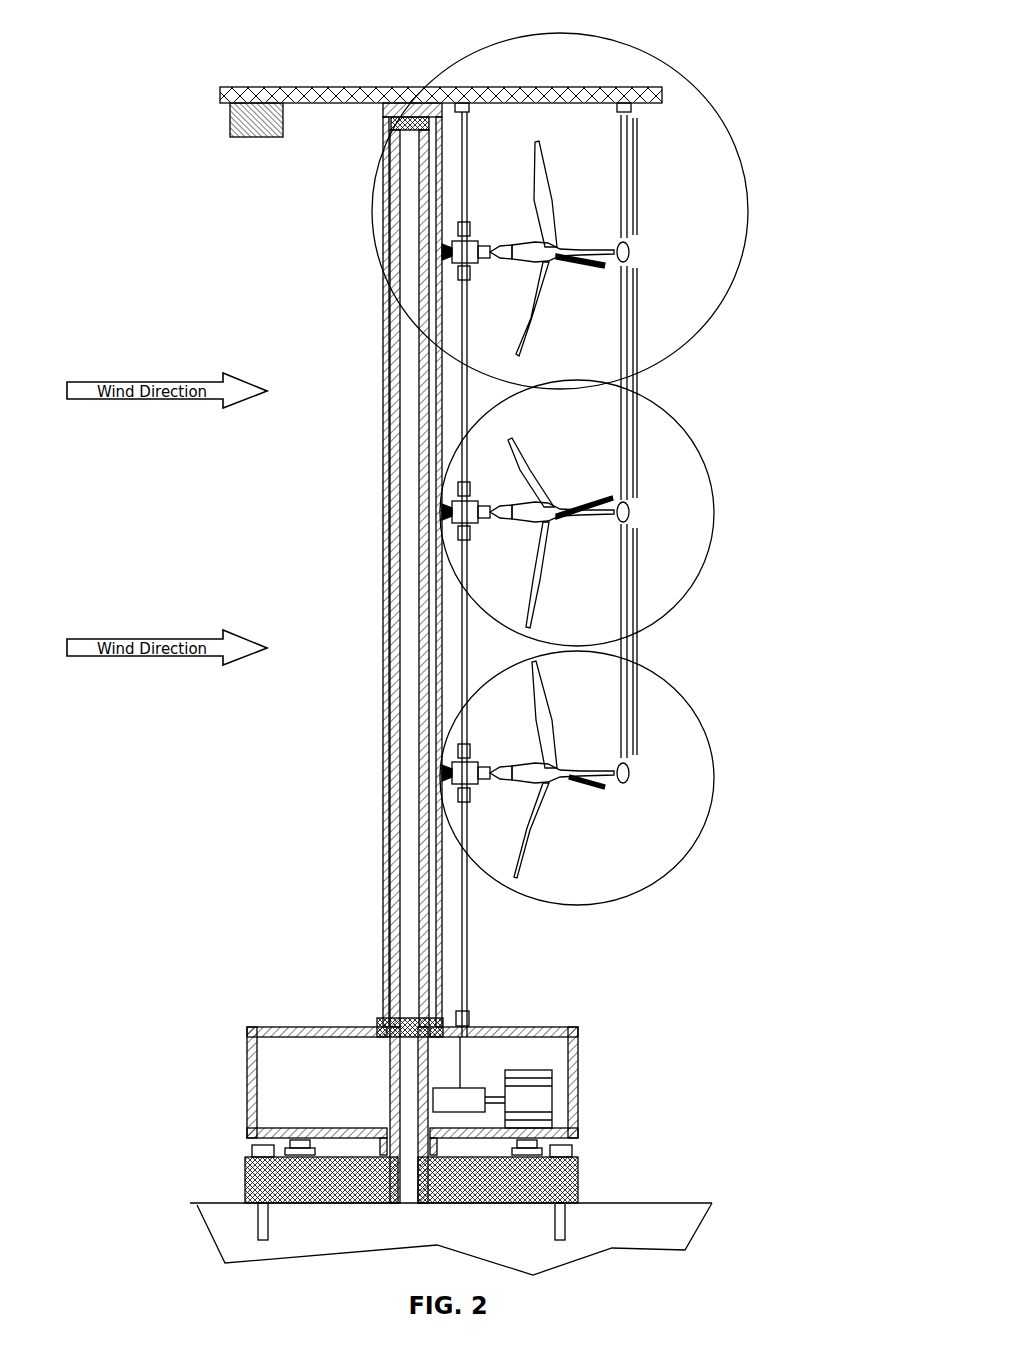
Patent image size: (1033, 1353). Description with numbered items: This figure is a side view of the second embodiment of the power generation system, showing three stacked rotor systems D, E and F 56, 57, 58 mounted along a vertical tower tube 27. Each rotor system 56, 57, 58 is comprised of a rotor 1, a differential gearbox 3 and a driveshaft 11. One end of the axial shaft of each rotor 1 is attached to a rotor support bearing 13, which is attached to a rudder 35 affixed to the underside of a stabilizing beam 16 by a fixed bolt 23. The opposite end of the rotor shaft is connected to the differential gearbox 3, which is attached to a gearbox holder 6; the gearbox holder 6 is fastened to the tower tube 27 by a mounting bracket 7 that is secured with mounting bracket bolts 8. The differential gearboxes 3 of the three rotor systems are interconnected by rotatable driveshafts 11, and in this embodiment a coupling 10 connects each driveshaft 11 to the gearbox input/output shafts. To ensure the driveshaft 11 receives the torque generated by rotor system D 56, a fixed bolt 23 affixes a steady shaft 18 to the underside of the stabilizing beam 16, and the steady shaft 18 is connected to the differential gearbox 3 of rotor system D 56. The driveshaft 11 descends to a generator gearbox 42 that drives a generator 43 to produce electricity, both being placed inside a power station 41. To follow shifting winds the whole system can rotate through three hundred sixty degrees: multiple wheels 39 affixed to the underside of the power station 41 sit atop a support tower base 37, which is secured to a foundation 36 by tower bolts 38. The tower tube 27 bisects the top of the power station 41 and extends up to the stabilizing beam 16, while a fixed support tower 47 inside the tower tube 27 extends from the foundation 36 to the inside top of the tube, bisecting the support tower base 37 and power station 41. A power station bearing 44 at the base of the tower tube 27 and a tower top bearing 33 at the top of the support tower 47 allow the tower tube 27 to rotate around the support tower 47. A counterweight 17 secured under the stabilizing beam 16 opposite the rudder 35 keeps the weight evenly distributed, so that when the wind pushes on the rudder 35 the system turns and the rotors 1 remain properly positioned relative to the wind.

The rotor 1 is at (530, 248).
The differential gearbox 3 is at (450, 247).
The gearbox holder 6 is at (446, 253).
The mounting bracket 7 is at (446, 258).
The mounting bracket bolts 8 is at (446, 263).
The coupling 10 is at (458, 228).
The driveshaft 11 is at (466, 320).
The rotor support bearing 13 is at (630, 252).
The stabilizing beam 16 is at (220, 93).
The counterweight 17 is at (232, 128).
The steady shaft 18 is at (474, 160).
The fixed bolt 23 is at (461, 103).
The tower tube 27 is at (385, 663).
The tower top bearing 33 is at (388, 135).
The rudder 35 is at (634, 180).
The foundation 36 is at (650, 1212).
The support tower base 37 is at (248, 1178).
The tower bolts 38 is at (255, 1152).
The wheels 39 is at (290, 1146).
The power station 41 is at (255, 1090).
The generator gearbox 42 is at (468, 1090).
The generator 43 is at (540, 1102).
The power station bearing 44 is at (380, 1020).
The support tower 47 is at (423, 960).
The rotor system D 56 is at (750, 228).
The rotor system E 57 is at (716, 512).
The rotor system F 58 is at (714, 775).